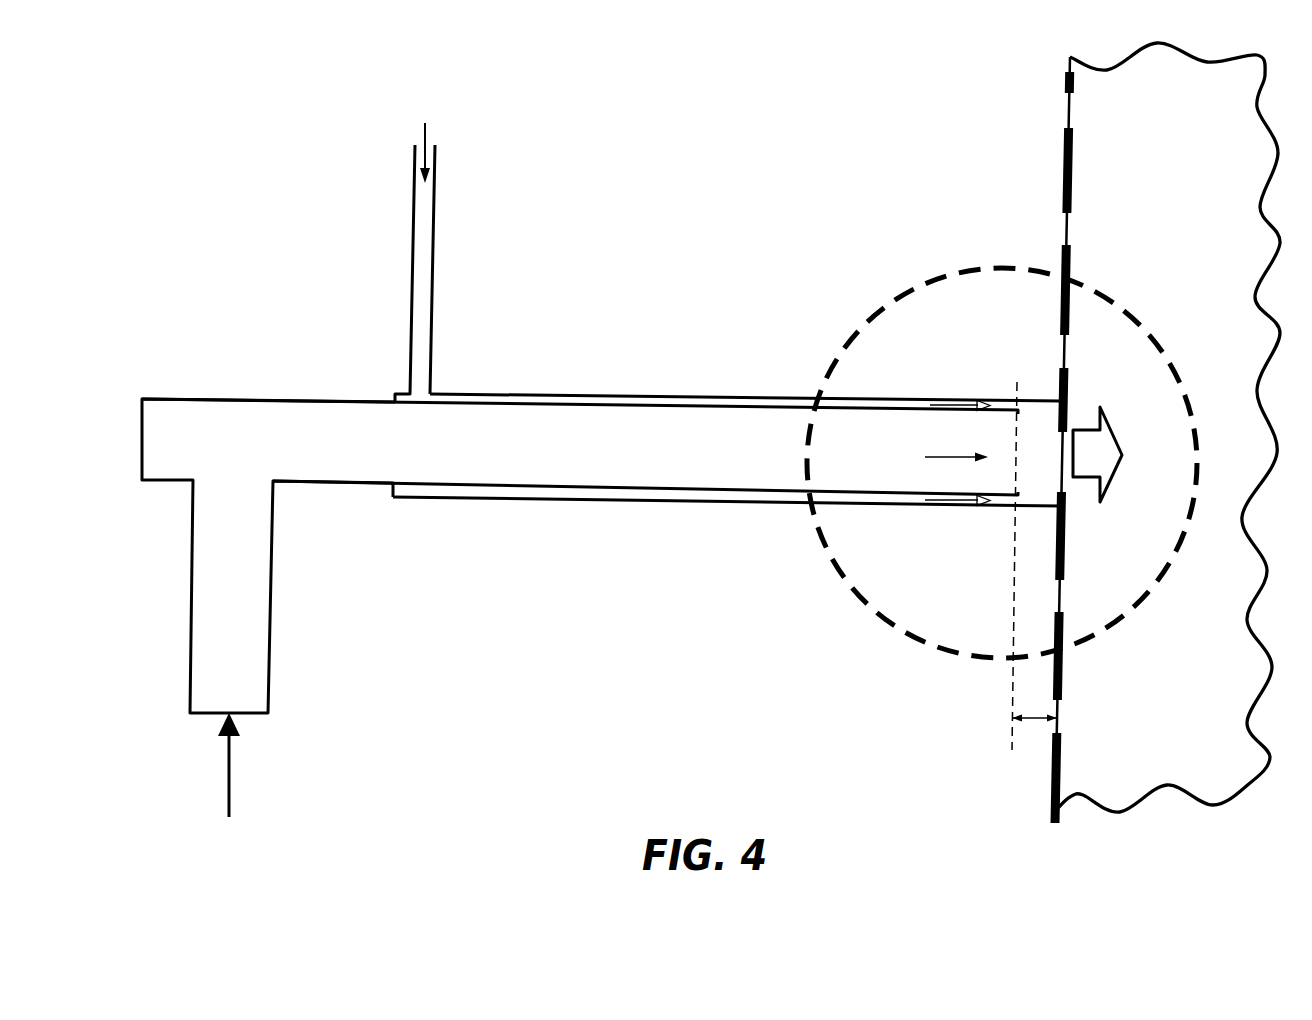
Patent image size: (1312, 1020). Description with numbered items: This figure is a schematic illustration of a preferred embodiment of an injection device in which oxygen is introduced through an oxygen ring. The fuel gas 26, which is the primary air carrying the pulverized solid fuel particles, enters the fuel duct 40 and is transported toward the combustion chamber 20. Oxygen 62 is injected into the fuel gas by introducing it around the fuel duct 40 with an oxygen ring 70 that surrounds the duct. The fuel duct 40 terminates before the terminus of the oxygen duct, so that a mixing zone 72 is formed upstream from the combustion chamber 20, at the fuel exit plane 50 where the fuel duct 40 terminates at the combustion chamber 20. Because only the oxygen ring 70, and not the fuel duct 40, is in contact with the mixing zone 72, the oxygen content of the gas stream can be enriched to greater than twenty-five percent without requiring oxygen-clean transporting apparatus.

The combustion chamber 20 is at (1165, 470).
The fuel gas 26 is at (230, 765).
The fuel duct 40 is at (311, 456).
The fuel exit plane 50 is at (1050, 772).
The oxygen 62 is at (427, 138).
The oxygen ring 70 is at (648, 400).
The mixing zone 72 is at (1054, 466).